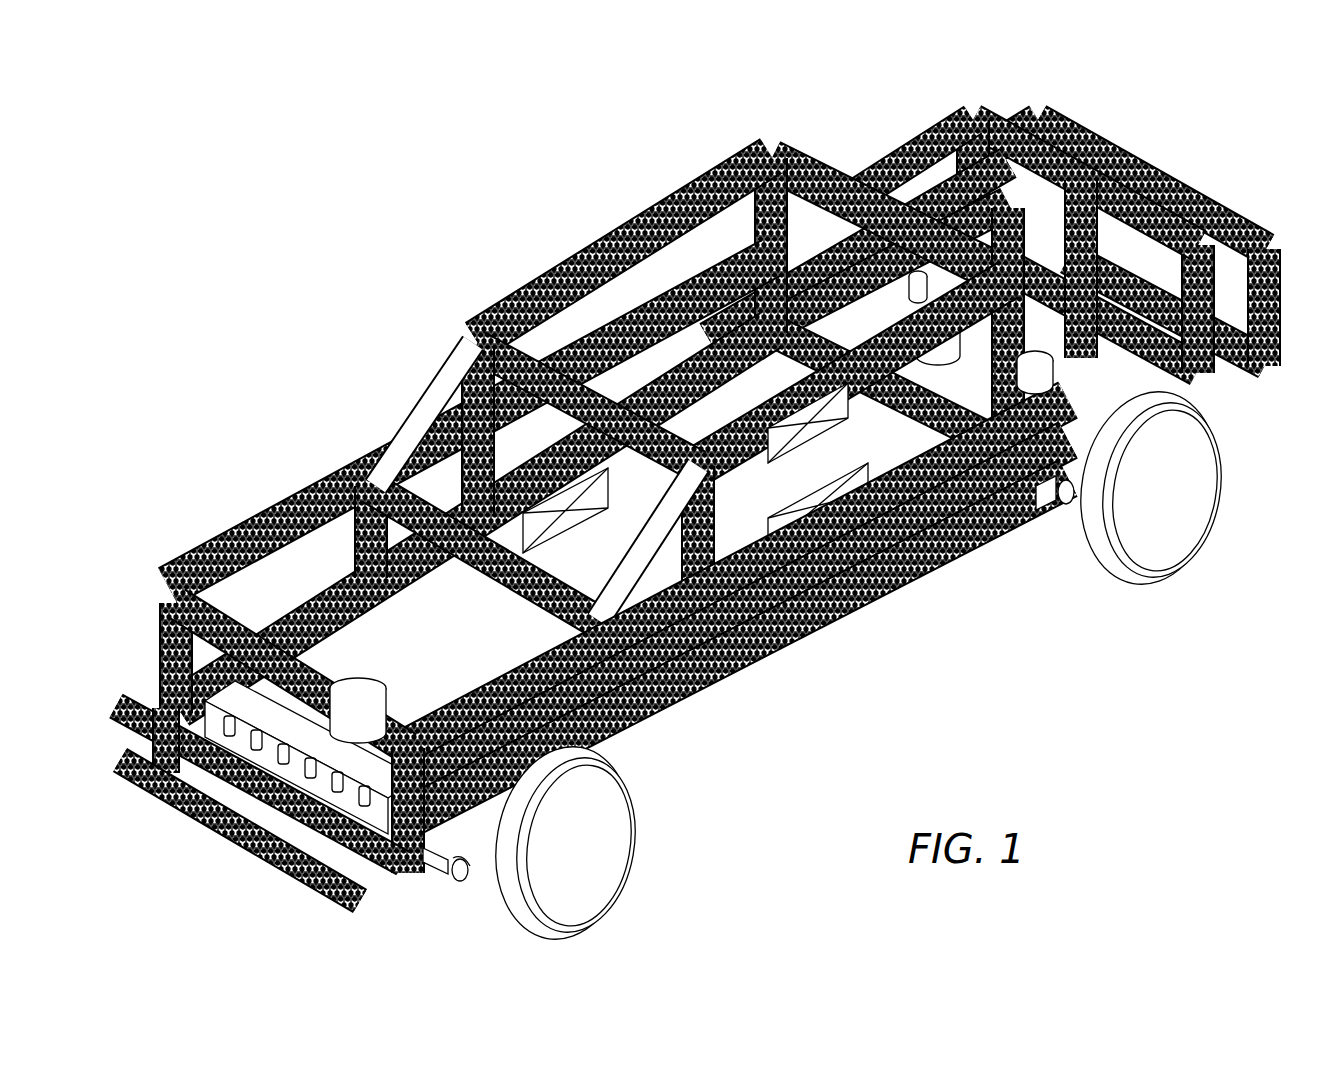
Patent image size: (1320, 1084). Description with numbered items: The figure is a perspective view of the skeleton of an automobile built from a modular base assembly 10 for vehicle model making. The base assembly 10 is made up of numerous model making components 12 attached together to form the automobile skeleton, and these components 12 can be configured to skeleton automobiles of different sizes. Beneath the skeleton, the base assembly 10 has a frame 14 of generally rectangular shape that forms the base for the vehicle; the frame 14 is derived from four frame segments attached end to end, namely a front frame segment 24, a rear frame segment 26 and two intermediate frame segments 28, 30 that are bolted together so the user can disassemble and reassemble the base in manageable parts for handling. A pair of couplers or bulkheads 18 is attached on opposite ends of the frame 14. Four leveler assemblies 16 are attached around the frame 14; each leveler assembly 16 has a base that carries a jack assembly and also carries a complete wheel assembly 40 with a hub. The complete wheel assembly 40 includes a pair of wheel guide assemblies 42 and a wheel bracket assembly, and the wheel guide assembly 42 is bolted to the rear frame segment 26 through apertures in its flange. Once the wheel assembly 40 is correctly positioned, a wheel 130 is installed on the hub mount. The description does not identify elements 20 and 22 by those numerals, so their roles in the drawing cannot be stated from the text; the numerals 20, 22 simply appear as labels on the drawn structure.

The base assembly 10 is at (696, 525).
The model making components 12 is at (522, 284).
The frame 14 is at (908, 568).
The leveler assemblies 16 is at (814, 604).
The couplers/bulkheads 18 is at (1073, 272).
The bumper 20 is at (225, 832).
The rear top cross member 22 is at (1172, 182).
The front frame segment 24 is at (425, 856).
The rear frame segment 26 is at (1033, 490).
The intermediate frame segment 28 is at (760, 652).
The intermediate frame segment 30 is at (955, 535).
The complete wheel assembly 40 is at (1058, 496).
The wheel guide assembly 42 is at (795, 432).
The wheel 130 is at (1165, 517).